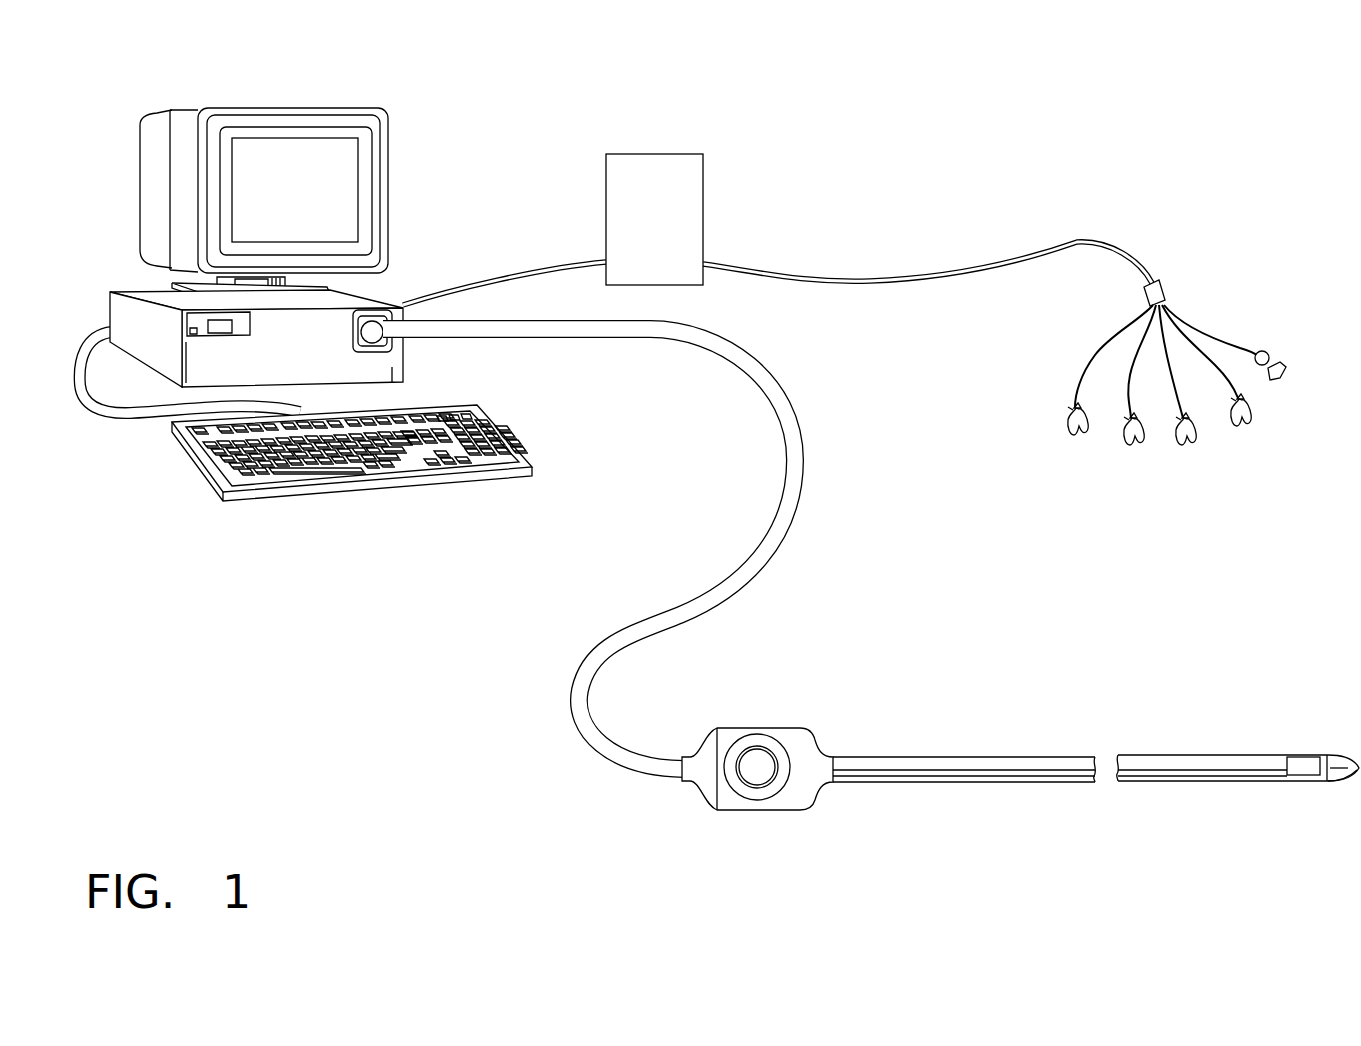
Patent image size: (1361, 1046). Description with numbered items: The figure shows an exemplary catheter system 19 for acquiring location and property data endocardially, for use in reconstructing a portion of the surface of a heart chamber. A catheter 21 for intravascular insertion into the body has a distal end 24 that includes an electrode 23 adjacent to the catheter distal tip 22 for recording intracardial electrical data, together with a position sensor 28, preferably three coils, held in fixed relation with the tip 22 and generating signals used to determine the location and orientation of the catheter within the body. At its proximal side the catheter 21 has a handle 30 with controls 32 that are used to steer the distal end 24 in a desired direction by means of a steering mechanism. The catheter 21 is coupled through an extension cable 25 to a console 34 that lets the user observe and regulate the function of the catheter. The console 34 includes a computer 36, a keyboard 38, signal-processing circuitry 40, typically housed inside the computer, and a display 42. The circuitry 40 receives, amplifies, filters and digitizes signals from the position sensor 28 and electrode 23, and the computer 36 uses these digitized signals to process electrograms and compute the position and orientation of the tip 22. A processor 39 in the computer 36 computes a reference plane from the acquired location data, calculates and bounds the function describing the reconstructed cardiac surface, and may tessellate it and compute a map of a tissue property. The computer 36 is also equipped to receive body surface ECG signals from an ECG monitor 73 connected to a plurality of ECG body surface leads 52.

The catheter system 19 is at (1250, 124).
The console 34 is at (149, 109).
The display 42 is at (382, 182).
The processor 39 is at (123, 316).
The computer 36 is at (378, 303).
The signal-processing circuitry 40 is at (108, 350).
The keyboard 38 is at (470, 405).
The ECG monitor 73 is at (631, 154).
The ECG body surface leads 52 is at (1123, 440).
The extension cable 25 is at (748, 363).
The handle 30 is at (727, 805).
The controls 32 is at (758, 737).
The catheter 21 is at (1058, 755).
The distal end 24 is at (1306, 727).
The catheter distal tip 22 is at (1342, 736).
The position sensor 28 is at (1297, 776).
The electrode 23 is at (1337, 782).